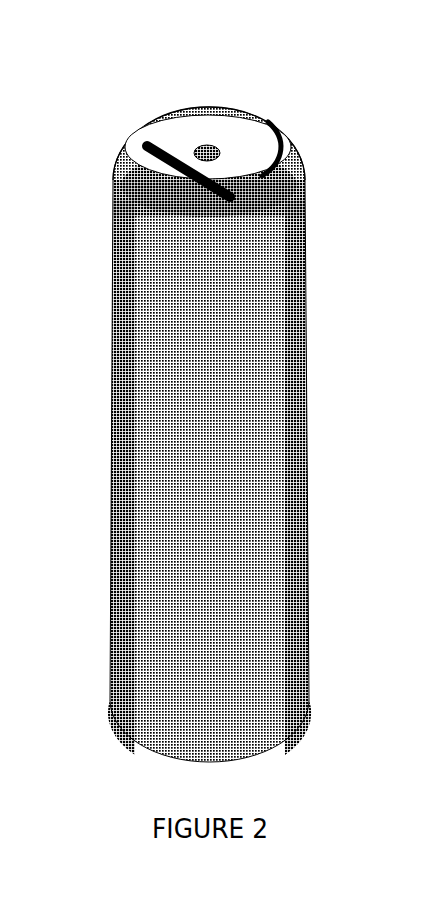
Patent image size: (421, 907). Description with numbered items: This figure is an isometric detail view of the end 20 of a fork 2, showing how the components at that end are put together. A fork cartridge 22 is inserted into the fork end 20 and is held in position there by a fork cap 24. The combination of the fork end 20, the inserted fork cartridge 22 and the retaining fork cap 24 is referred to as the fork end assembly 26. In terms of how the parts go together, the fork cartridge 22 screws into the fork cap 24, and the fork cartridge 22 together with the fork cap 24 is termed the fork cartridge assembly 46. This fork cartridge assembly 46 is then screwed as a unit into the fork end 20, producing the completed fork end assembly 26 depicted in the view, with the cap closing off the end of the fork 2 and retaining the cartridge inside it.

The fork 2 is at (216, 391).
The end of the fork 20 is at (303, 245).
The fork cartridge 22 is at (240, 137).
The fork cap 24 is at (204, 108).
The fork end assembly 26 is at (316, 171).
The fork cartridge assembly 46 is at (100, 182).